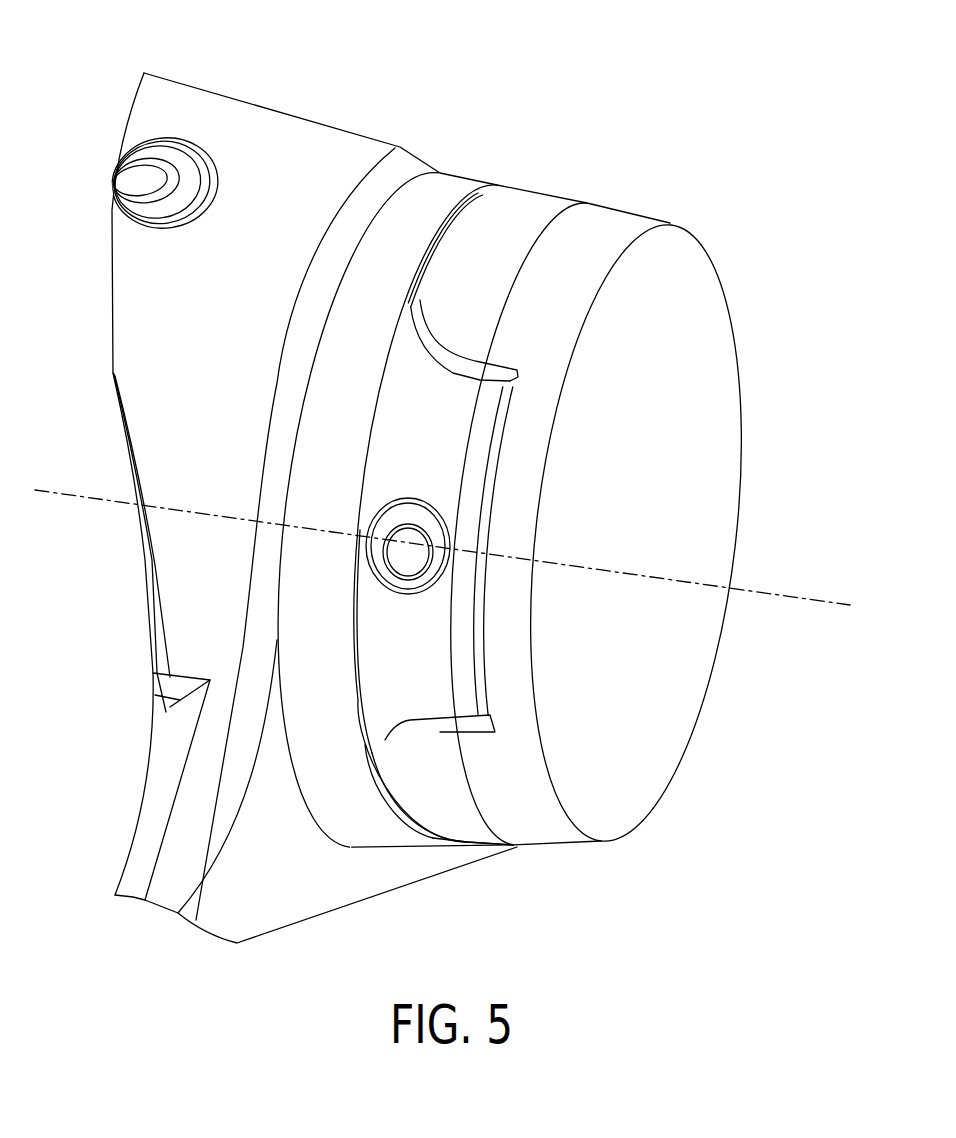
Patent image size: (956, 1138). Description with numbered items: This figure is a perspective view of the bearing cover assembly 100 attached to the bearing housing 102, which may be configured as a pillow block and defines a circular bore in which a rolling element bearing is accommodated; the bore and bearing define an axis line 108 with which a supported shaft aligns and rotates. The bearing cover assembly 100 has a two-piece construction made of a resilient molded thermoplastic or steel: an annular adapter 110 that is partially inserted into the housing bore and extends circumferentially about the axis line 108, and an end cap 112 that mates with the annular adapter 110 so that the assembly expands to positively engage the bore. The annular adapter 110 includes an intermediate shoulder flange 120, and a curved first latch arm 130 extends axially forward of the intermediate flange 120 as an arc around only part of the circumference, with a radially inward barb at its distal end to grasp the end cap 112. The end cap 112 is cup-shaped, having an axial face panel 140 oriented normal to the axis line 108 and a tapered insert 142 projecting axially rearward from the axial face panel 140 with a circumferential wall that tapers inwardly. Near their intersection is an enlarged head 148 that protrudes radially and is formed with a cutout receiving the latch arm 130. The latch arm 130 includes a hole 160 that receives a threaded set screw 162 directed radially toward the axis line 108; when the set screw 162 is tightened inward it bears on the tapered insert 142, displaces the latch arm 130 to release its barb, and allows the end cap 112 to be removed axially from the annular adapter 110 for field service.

The bearing cover assembly 100 is at (693, 104).
The bearing housing 102 is at (246, 118).
The axis line 108 is at (822, 585).
The annular adapter 110 is at (449, 187).
The end cap 112 is at (621, 225).
The intermediate shoulder flange 120 is at (380, 833).
The first latch arm 130 is at (390, 690).
The axial face panel 140 is at (685, 710).
The tapered insert 142 is at (460, 827).
The enlarged head 148 is at (527, 212).
The hole 160 is at (390, 560).
The set screw 162 is at (423, 555).